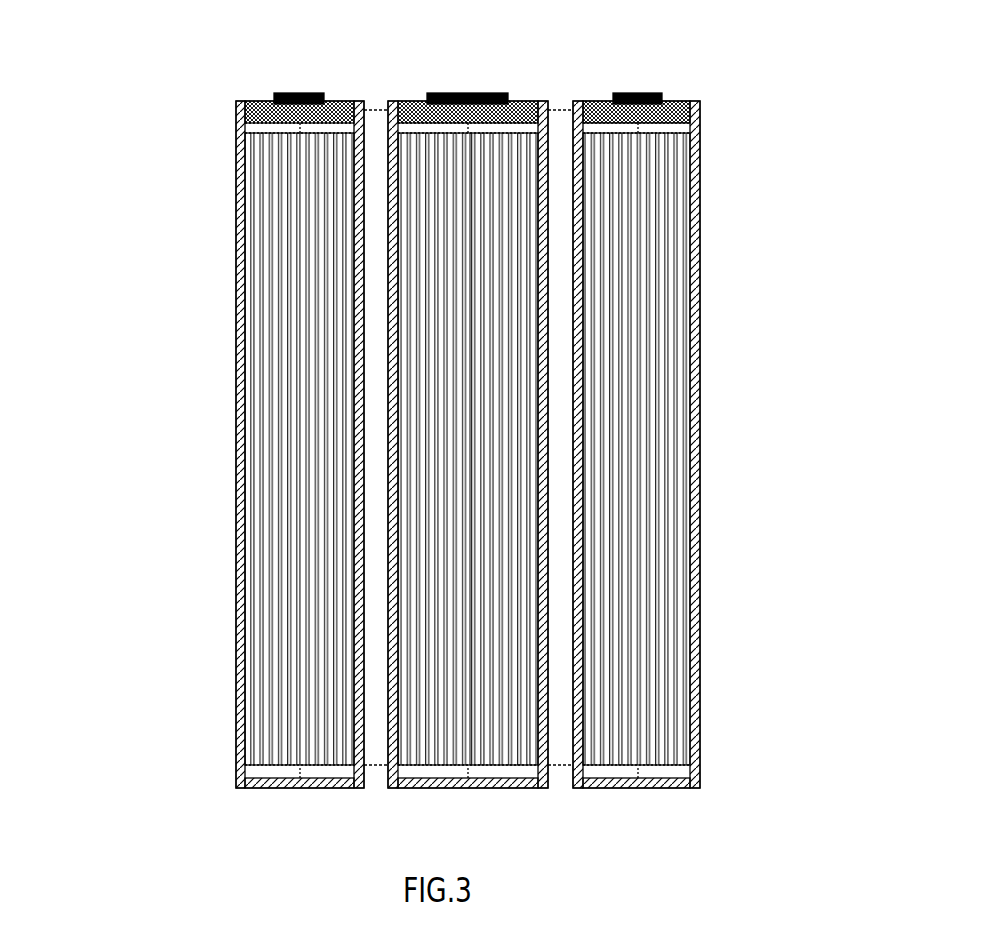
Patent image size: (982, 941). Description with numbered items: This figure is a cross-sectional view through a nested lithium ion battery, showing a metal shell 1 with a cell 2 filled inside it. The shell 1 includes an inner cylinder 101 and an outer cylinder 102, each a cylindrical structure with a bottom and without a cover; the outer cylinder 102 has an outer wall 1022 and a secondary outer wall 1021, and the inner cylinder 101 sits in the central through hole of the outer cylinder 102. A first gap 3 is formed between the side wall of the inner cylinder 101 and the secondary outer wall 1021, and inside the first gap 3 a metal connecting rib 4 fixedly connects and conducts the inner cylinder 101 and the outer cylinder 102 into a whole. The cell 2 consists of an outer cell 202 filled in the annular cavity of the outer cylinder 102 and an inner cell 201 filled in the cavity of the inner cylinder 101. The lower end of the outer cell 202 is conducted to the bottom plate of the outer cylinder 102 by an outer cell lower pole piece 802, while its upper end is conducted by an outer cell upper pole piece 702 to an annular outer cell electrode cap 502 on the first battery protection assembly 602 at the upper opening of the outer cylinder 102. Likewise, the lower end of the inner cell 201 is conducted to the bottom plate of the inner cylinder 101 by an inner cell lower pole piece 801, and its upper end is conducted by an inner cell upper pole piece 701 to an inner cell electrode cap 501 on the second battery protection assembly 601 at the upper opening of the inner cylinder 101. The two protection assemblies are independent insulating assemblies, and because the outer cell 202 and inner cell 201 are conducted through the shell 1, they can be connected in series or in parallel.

The shell 1 is at (218, 430).
The inner cylinder 101 is at (390, 400).
The outer cylinder 102 is at (215, 444).
The secondary outer wall 1021 is at (355, 328).
The outer wall 1022 is at (242, 294).
The cell 2 is at (678, 410).
The inner cell 201 is at (472, 462).
The outer cell 202 is at (638, 353).
The first gap 3 is at (372, 136).
The metal connecting rib 4 is at (561, 110).
The inner cell electrode cap 501 is at (452, 95).
The outer cell electrode cap 502 is at (303, 100).
The second battery protection assembly 601 is at (520, 107).
The first battery protection assembly 602 is at (673, 102).
The inner cell upper pole piece 701 is at (470, 128).
The outer cell upper pole piece 702 is at (638, 125).
The inner cell lower pole piece 801 is at (468, 770).
The outer cell lower pole piece 802 is at (300, 770).